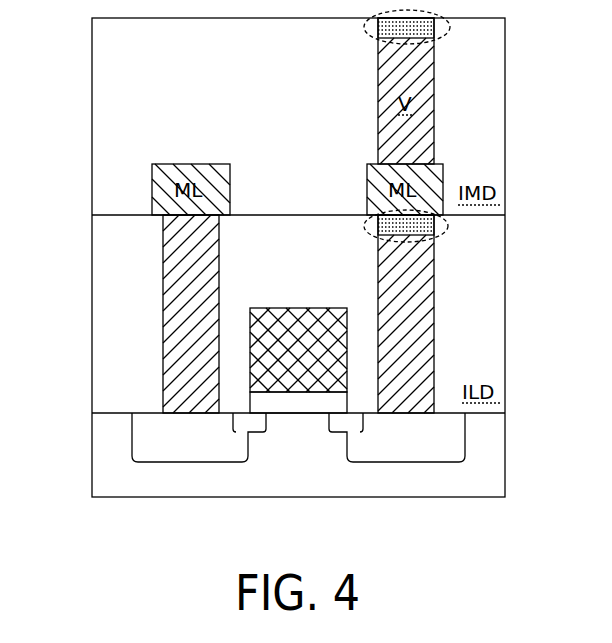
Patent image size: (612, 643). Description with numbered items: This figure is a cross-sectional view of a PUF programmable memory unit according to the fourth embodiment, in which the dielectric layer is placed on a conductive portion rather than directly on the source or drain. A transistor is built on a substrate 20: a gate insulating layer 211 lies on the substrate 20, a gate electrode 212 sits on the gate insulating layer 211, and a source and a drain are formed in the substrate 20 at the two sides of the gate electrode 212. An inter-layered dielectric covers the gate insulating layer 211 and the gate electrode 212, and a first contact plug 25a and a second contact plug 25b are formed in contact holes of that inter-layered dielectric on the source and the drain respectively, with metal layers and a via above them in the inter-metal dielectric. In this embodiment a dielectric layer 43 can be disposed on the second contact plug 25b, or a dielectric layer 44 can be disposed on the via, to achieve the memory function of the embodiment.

The substrate 20 is at (104, 458).
The gate insulating layer 211 is at (288, 402).
The gate electrode 212 is at (317, 393).
The first contact plug 25a is at (170, 259).
The second contact plug 25b is at (427, 333).
The dielectric layer 43 is at (432, 223).
The dielectric layer 44 is at (432, 22).